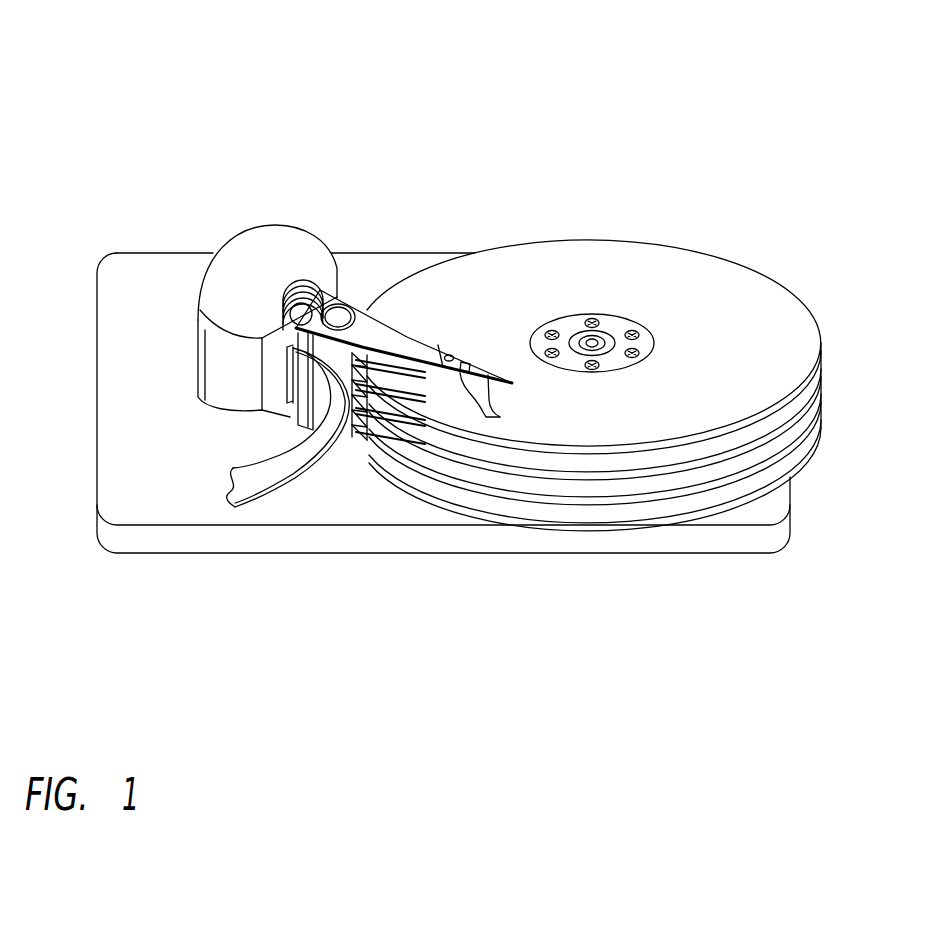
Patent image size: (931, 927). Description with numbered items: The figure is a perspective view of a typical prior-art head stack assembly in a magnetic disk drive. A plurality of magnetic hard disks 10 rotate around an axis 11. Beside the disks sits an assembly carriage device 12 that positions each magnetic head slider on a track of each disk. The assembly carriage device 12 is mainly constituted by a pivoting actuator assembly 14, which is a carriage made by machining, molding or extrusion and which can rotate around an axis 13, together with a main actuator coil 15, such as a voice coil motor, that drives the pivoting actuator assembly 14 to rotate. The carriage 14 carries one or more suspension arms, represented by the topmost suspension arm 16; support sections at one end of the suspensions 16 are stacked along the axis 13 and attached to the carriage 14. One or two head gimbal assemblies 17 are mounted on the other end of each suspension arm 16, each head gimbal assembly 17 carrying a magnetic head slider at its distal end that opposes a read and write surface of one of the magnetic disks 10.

The magnetic hard disks 10 is at (215, 76).
The axis 11 is at (600, 338).
The assembly carriage device 12 is at (217, 300).
The axis 13 is at (348, 308).
The pivoting actuator assembly 14 is at (237, 463).
The main actuator coil 15 is at (303, 390).
The suspension arm 16 is at (405, 338).
The head gimbal assembly 17 is at (500, 417).